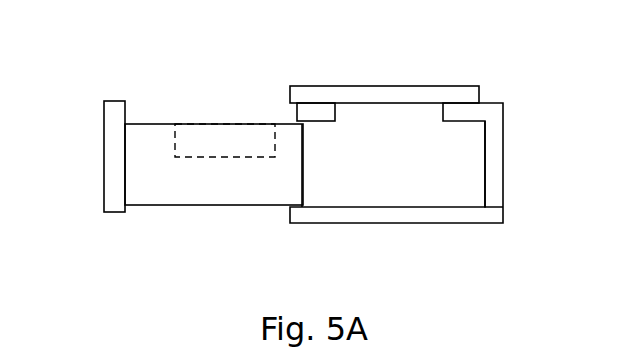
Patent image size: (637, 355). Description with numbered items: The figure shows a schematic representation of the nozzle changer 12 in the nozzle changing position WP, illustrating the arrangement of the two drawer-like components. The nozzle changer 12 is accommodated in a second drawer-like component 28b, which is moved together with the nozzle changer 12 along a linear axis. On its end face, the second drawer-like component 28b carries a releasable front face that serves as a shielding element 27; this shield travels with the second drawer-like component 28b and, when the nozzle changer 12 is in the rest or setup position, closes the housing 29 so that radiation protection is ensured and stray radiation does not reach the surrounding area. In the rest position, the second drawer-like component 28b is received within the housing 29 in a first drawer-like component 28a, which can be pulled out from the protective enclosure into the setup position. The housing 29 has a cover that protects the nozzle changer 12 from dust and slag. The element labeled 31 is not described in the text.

The shielding element 27 is at (112, 178).
The second drawer-like component 28b is at (150, 192).
The nozzle changer 12 is at (195, 142).
The nozzle changing position WP is at (214, 89).
The housing 29 is at (408, 88).
The first drawer-like component 28a is at (443, 218).
The housing wall 31 is at (497, 166).